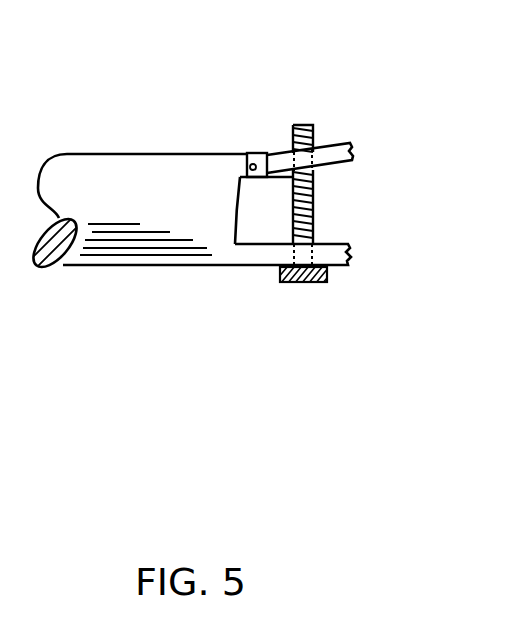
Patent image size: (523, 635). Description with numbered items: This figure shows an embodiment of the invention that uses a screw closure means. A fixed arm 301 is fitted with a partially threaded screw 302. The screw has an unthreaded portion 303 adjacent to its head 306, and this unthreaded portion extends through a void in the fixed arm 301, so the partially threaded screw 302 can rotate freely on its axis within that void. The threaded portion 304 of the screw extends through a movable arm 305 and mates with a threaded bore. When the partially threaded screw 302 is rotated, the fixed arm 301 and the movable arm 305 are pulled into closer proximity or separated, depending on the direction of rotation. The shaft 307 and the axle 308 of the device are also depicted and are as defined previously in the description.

The fixed arm 301 is at (330, 267).
The partially threaded screw 302 is at (300, 126).
The unthreaded portion 303 is at (313, 243).
The threaded portion 304 is at (313, 206).
The movable arm 305 is at (338, 145).
The head 306 is at (280, 270).
The shaft 307 is at (150, 154).
The axle 308 is at (248, 154).